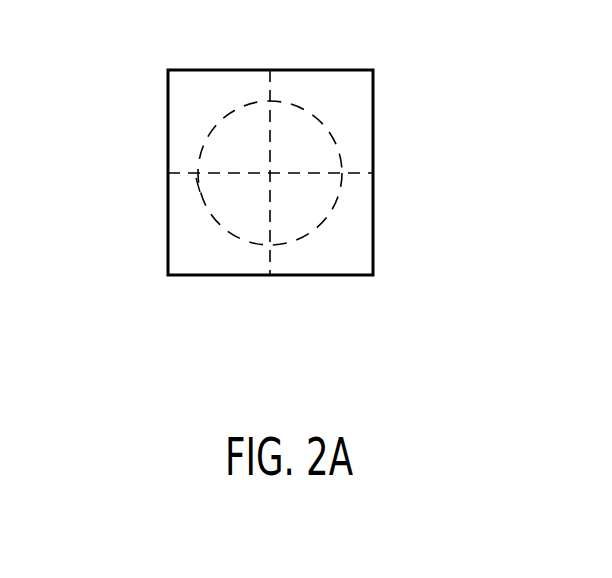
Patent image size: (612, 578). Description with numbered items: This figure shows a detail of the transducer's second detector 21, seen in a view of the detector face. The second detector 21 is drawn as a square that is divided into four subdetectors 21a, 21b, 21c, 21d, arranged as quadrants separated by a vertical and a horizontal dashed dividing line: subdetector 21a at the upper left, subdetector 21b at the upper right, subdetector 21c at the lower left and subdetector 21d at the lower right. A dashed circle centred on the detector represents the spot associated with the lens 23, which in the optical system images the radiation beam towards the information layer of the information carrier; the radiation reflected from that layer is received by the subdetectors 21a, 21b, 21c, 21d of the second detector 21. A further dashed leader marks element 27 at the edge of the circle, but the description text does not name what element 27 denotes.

The second detector 21 is at (196, 316).
The subdetector 21a is at (178, 112).
The subdetector 21b is at (365, 112).
The subdetector 21c is at (185, 243).
The subdetector 21d is at (358, 245).
The lens 23 is at (345, 196).
The boundary line 27 is at (197, 186).